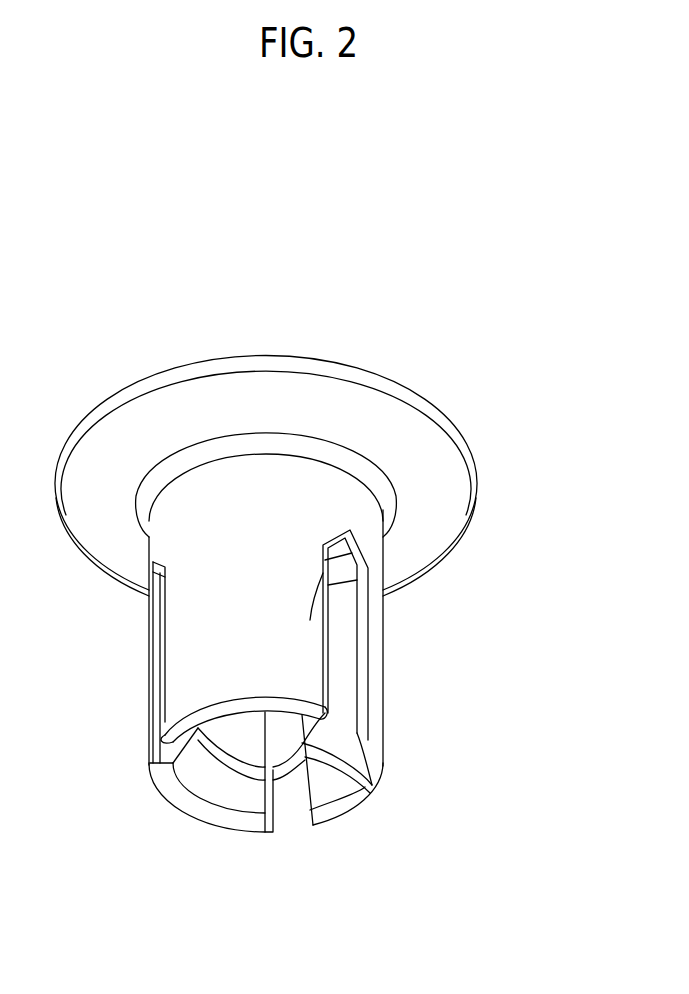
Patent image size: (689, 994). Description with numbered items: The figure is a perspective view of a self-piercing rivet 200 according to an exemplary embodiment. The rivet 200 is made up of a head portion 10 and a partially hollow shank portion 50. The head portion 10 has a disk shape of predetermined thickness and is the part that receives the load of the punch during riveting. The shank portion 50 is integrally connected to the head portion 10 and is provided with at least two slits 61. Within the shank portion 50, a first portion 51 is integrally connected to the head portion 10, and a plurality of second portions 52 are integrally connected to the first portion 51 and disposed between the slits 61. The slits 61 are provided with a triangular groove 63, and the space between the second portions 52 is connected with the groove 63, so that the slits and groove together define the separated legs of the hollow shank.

The rivet 200 is at (282, 257).
The head portion 10 is at (355, 410).
The shank portion 50 is at (342, 564).
The first portion 51 is at (345, 505).
The second portions 52 is at (377, 720).
The slits 61 is at (334, 637).
The triangular groove 63 is at (325, 573).